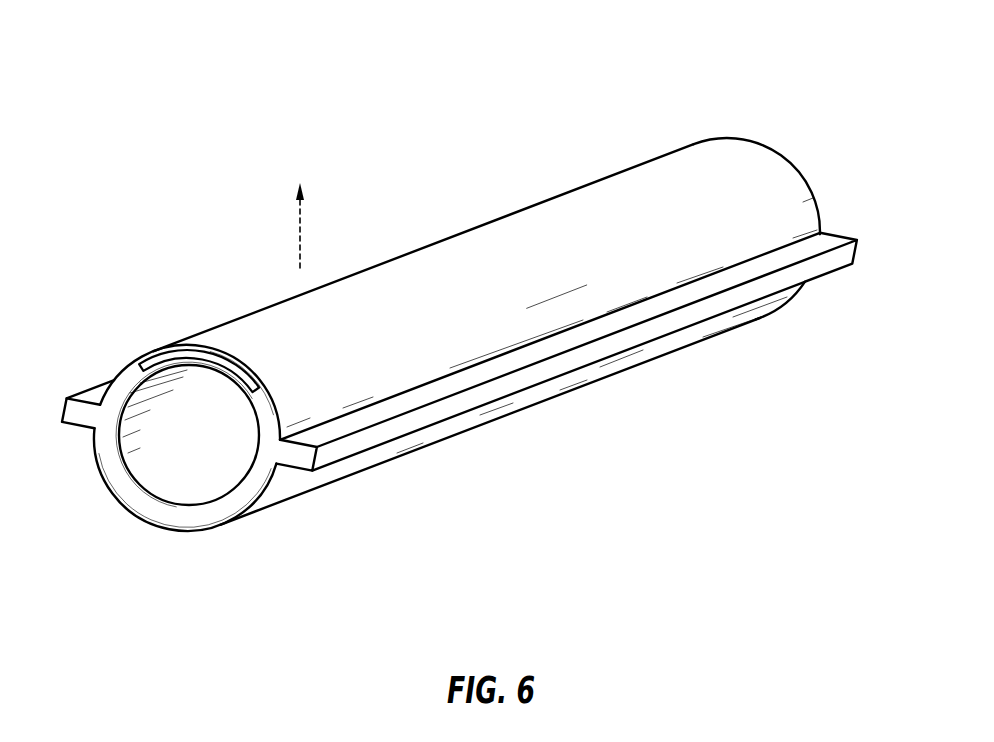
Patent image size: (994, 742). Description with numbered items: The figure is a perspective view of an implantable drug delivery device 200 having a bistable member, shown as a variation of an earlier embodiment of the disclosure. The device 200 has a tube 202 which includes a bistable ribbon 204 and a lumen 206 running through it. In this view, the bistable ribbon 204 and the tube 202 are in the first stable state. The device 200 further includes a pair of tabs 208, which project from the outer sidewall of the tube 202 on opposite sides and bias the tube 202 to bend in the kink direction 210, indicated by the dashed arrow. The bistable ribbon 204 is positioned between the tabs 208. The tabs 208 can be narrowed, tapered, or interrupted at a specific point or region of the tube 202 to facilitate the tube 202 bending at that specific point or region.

The device 200 is at (258, 86).
The tube 202 is at (470, 260).
The bistable ribbon 204 is at (160, 360).
The lumen 206 is at (188, 447).
The tabs 208 is at (78, 408).
The kink direction 210 is at (300, 238).